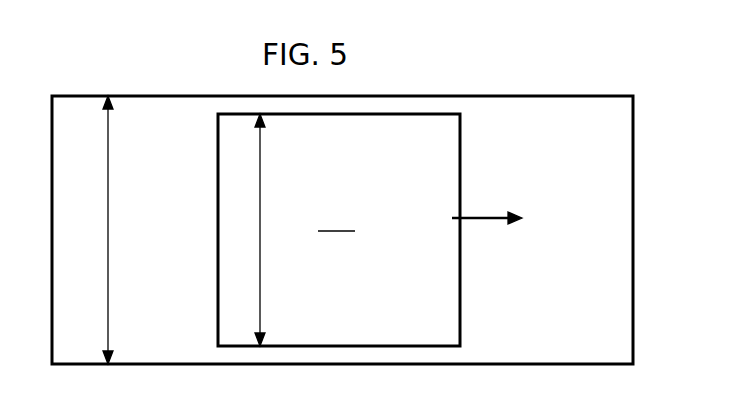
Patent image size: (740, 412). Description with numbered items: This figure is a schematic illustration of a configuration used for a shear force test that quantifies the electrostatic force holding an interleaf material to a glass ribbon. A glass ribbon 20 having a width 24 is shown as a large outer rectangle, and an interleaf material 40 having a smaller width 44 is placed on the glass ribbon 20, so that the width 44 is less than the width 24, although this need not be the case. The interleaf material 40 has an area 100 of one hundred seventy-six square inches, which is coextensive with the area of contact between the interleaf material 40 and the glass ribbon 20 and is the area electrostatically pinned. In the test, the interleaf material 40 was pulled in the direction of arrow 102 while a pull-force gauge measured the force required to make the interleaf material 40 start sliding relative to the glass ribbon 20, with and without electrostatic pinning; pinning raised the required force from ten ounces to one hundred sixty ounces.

The glass ribbon 20 is at (598, 122).
The width 24 is at (108, 160).
The interleaf material 40 is at (425, 113).
The width 44 is at (260, 193).
The area 100 is at (336, 220).
The arrow 102 is at (494, 218).